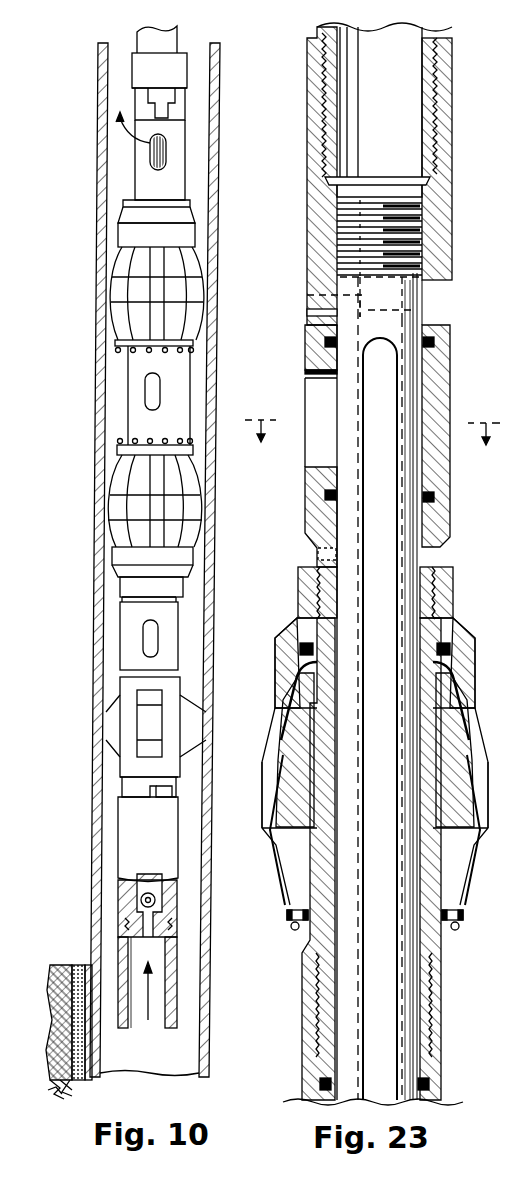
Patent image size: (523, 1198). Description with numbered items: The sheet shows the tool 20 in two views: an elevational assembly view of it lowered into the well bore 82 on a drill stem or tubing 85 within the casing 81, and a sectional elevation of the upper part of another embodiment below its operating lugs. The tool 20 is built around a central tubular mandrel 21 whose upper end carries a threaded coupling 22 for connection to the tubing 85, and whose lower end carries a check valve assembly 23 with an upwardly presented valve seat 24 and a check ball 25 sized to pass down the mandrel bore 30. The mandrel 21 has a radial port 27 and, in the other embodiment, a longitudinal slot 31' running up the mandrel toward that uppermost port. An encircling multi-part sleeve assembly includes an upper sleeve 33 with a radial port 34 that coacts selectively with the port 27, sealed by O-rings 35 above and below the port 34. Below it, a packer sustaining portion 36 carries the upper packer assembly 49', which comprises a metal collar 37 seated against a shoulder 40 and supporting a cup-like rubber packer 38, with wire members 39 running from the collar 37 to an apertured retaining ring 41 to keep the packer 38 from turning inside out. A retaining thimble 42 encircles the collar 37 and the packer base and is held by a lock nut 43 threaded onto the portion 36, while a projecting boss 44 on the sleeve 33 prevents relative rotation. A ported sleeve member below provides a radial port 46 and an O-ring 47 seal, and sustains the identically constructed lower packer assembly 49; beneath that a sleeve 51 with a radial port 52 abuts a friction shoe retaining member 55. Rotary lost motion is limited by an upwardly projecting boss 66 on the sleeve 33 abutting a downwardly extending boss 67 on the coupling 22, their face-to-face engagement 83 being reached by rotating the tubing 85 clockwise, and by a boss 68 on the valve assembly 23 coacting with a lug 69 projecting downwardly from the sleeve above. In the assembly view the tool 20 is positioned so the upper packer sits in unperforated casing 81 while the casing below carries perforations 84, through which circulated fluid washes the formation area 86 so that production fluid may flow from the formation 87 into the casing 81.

In FIG. 10, the tool 20 is at (124, 362).
In FIG. 10, the mandrel 21 is at (182, 112).
In FIG. 10, the threaded coupling 22 is at (190, 70).
In FIG. 23, the threaded coupling 22 is at (455, 120).
In FIG. 10, the check valve assembly 23 is at (112, 835).
In FIG. 10, the valve seat 24 is at (123, 926).
In FIG. 10, the check ball 25 is at (145, 895).
In FIG. 23, the check ball 25 is at (372, 449).
In FIG. 10, the radial port 27 is at (166, 150).
In FIG. 23, the radial port 27 is at (348, 425).
In FIG. 10, the mandrel bore 30 is at (140, 912).
In FIG. 23, the mandrel bore 30 is at (383, 290).
In FIG. 23, the slot 31' is at (427, 690).
In FIG. 10, the upper sleeve 33 is at (138, 162).
In FIG. 23, the upper sleeve 33 is at (452, 385).
In FIG. 10, the radial port 34 is at (150, 150).
In FIG. 23, the radial port 34 is at (313, 400).
In FIG. 23, the O-rings 35 is at (435, 342).
In FIG. 10, the packer sustaining portion 36 is at (128, 468).
In FIG. 23, the packer sustaining portion 36 is at (300, 870).
In FIG. 23, the metal collar 37 is at (448, 650).
In FIG. 10, the cup-like packer 38 is at (137, 505).
In FIG. 23, the cup-like packer 38 is at (462, 733).
In FIG. 10, the wire members 39 is at (116, 485).
In FIG. 23, the wire members 39 is at (467, 892).
In FIG. 23, the shoulder 40 is at (462, 717).
In FIG. 10, the apertured retaining ring 41 is at (125, 455).
In FIG. 23, the apertured retaining ring 41 is at (287, 917).
In FIG. 10, the retaining thimble 42 is at (190, 580).
In FIG. 23, the retaining thimble 42 is at (458, 626).
In FIG. 10, the lock nut 43 is at (182, 590).
In FIG. 23, the lock nut 43 is at (300, 567).
In FIG. 23, the projecting boss 44 is at (318, 553).
In FIG. 10, the radial port 46 is at (148, 387).
In FIG. 23, the O-ring 47 is at (320, 1087).
In FIG. 10, the lower packer assembly 49 is at (117, 569).
In FIG. 10, the upper packer assembly 49' is at (122, 300).
In FIG. 23, the upper packer assembly 49' is at (385, 824).
In FIG. 10, the sleeve 51 is at (122, 648).
In FIG. 10, the radial port 52 is at (145, 632).
In FIG. 10, the friction shoe retaining member 55 is at (110, 690).
In FIG. 10, the boss 66 is at (140, 101).
In FIG. 23, the boss 66 is at (428, 305).
In FIG. 10, the boss 67 is at (165, 100).
In FIG. 23, the boss 67 is at (310, 313).
In FIG. 10, the boss 68 is at (148, 787).
In FIG. 10, the lug 69 is at (178, 784).
In FIG. 10, the casing 81 is at (98, 72).
In FIG. 10, the well bore 82 is at (78, 995).
In FIG. 23, the face to face engagement 83 is at (320, 305).
In FIG. 10, the perforations 84 is at (92, 1010).
In FIG. 10, the tubing 85 is at (142, 39).
In FIG. 10, the formation area 86 is at (58, 975).
In FIG. 10, the formation 87 is at (58, 1056).